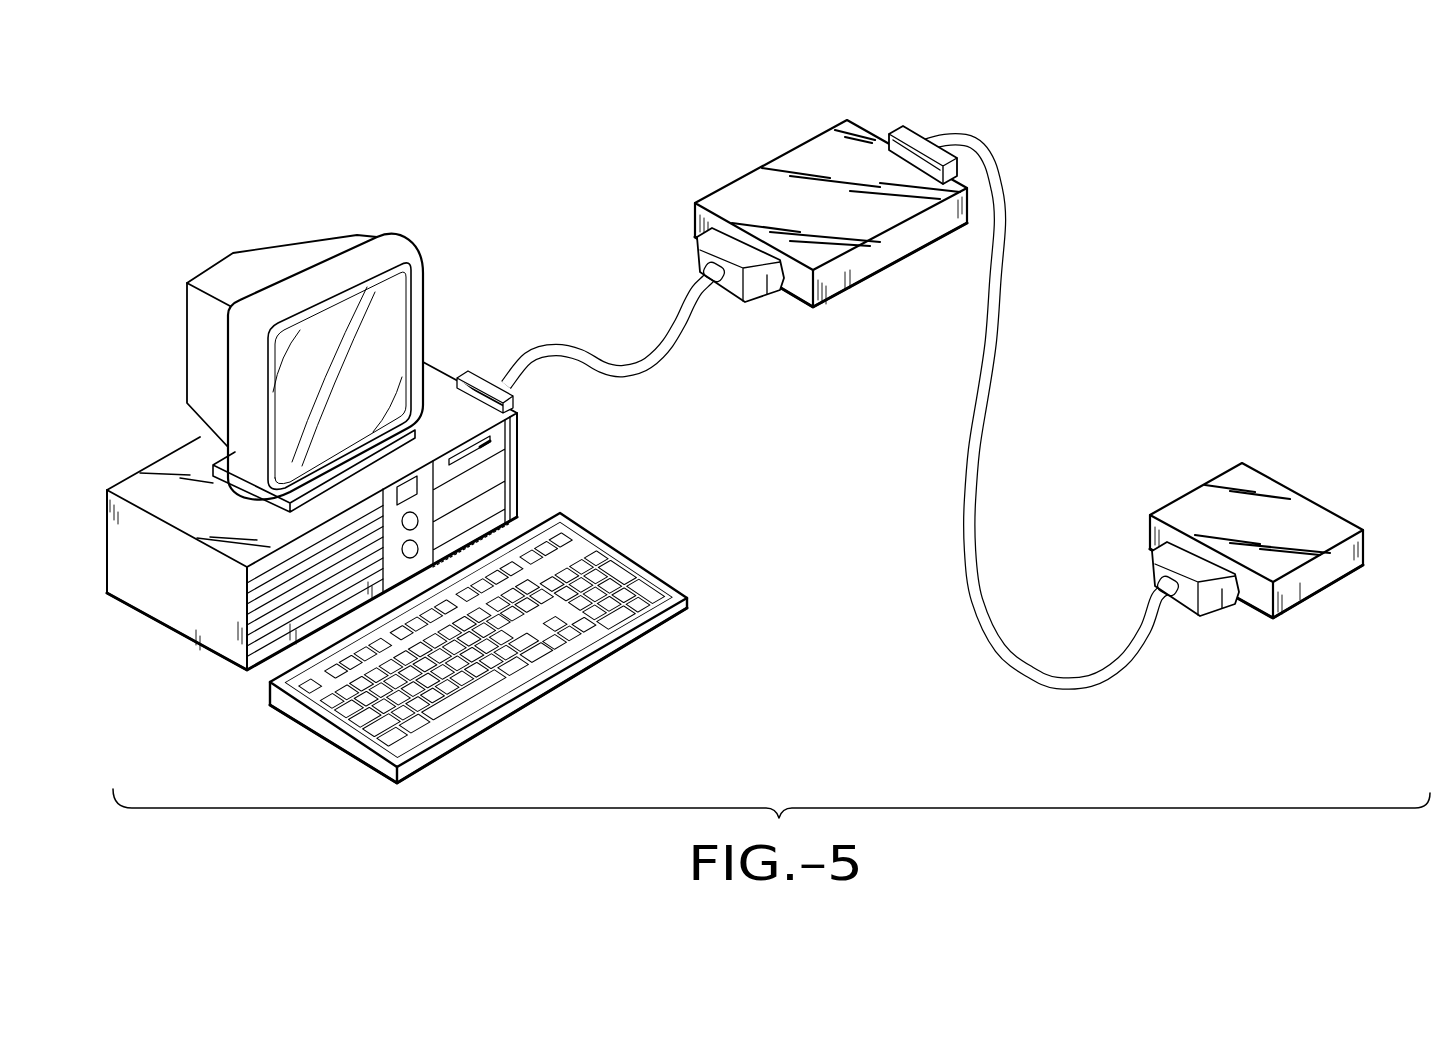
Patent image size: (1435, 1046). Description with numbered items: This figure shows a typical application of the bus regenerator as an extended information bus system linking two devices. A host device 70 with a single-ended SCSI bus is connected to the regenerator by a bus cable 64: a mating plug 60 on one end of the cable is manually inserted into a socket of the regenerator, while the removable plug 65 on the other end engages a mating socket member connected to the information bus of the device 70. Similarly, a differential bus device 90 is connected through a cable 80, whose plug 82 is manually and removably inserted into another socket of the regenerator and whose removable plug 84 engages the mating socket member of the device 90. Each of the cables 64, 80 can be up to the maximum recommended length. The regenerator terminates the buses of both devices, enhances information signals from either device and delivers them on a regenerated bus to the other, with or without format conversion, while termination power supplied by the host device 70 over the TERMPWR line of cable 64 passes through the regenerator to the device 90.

The mating plug 60 is at (697, 257).
The bus cable 64 is at (674, 367).
The removable plug 65 is at (487, 376).
The device 70 is at (427, 269).
The cable 80 is at (977, 453).
The plug 82 is at (926, 124).
The removable plug 84 is at (1150, 570).
The differential bus device 90 is at (1263, 537).